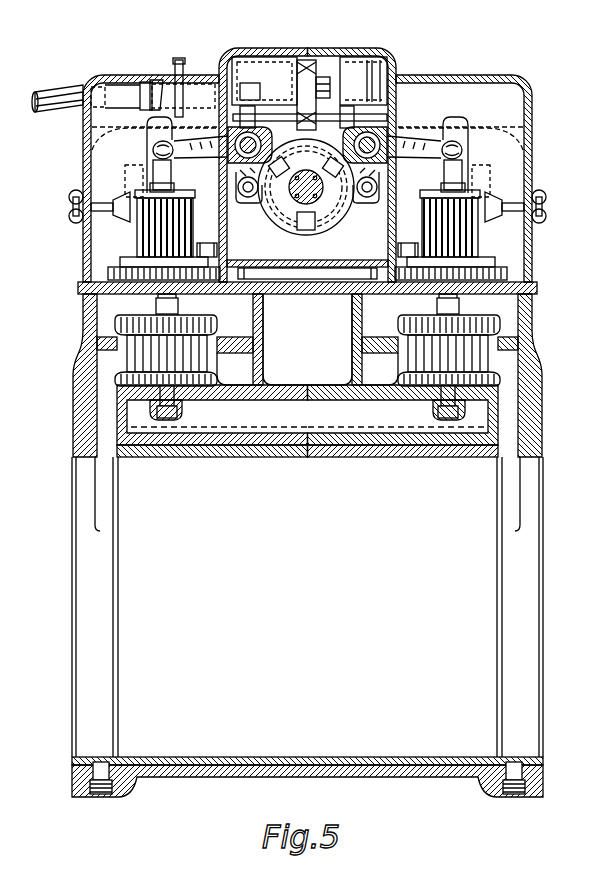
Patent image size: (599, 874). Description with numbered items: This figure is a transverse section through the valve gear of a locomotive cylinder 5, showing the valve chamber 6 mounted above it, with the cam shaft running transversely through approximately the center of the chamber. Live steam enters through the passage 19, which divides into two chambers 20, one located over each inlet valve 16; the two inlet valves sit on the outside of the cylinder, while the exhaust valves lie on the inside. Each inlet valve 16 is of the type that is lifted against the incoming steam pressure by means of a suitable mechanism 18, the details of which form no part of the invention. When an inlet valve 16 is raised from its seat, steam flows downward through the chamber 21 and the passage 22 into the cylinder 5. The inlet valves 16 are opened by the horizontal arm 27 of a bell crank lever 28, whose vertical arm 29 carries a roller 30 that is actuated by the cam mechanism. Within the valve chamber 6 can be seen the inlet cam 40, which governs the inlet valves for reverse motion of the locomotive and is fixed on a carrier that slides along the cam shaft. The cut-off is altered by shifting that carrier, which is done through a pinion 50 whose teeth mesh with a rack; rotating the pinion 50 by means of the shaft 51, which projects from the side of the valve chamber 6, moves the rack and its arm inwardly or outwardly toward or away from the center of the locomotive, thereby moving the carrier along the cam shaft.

The cylinder 5 is at (307, 591).
The valve chamber 6 is at (100, 116).
The inlet valve 16 is at (143, 355).
The mechanism 18 is at (152, 229).
The passage 19 is at (307, 339).
The chamber 20 is at (314, 339).
The chamber 21 is at (307, 361).
The passage 22 is at (100, 441).
The horizontal arm 27 is at (153, 151).
The bell crank lever 28 is at (249, 106).
The vertical arm 29 is at (234, 171).
The roller 30 is at (250, 206).
The inlet cam 40 is at (340, 217).
The pinion 50 is at (306, 60).
The shaft 51 is at (43, 88).